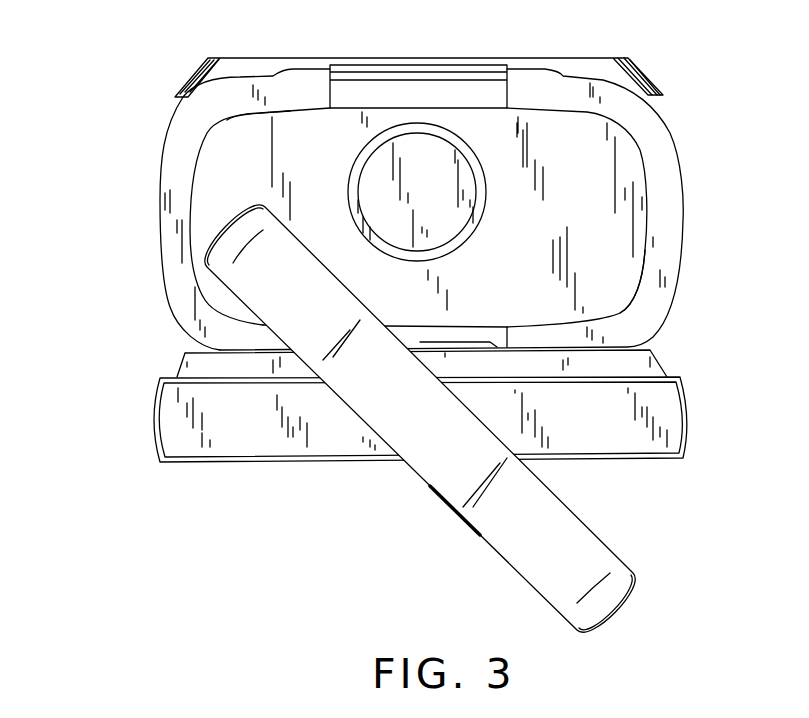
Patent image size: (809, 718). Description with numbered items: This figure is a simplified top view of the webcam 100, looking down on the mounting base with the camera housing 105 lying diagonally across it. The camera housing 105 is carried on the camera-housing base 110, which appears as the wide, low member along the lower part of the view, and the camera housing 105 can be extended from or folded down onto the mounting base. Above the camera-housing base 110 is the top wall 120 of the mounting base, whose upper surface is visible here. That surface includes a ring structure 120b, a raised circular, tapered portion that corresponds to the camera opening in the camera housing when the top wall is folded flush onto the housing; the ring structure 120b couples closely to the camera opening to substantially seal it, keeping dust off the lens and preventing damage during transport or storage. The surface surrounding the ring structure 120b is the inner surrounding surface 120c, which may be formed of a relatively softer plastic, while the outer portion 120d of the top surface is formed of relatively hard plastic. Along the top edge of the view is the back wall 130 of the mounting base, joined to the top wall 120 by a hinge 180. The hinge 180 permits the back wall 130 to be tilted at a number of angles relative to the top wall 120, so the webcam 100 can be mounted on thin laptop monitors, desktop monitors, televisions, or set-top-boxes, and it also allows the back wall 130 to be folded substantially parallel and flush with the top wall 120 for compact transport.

The webcam 100 is at (124, 499).
The camera housing 105 is at (600, 530).
The camera-housing base 110 is at (687, 447).
The top wall 120 is at (666, 312).
The ring structure 120b is at (487, 192).
The surrounding surface (inner portion of top surface) 120c is at (341, 148).
The outer portion of top surface 120d is at (673, 236).
The back wall 130 is at (655, 72).
The hinge 180 is at (363, 84).